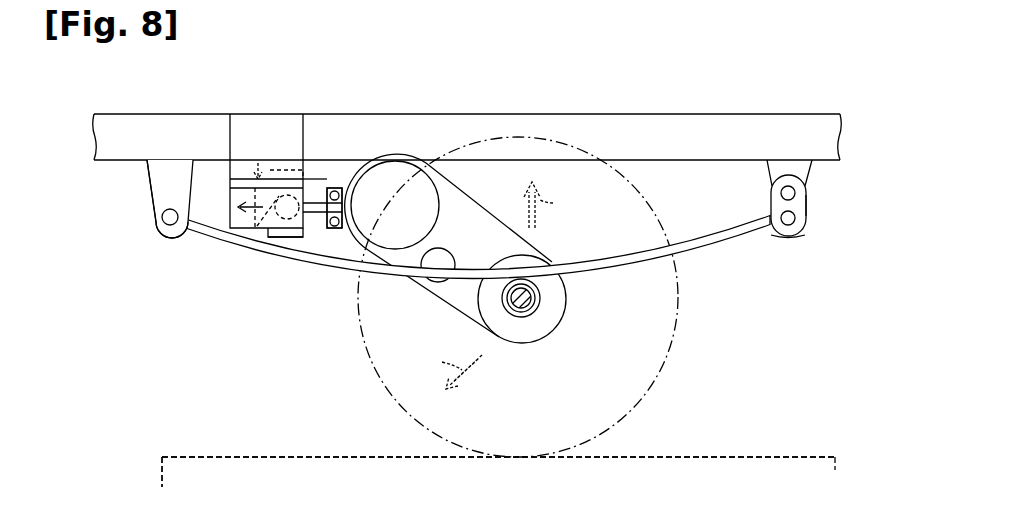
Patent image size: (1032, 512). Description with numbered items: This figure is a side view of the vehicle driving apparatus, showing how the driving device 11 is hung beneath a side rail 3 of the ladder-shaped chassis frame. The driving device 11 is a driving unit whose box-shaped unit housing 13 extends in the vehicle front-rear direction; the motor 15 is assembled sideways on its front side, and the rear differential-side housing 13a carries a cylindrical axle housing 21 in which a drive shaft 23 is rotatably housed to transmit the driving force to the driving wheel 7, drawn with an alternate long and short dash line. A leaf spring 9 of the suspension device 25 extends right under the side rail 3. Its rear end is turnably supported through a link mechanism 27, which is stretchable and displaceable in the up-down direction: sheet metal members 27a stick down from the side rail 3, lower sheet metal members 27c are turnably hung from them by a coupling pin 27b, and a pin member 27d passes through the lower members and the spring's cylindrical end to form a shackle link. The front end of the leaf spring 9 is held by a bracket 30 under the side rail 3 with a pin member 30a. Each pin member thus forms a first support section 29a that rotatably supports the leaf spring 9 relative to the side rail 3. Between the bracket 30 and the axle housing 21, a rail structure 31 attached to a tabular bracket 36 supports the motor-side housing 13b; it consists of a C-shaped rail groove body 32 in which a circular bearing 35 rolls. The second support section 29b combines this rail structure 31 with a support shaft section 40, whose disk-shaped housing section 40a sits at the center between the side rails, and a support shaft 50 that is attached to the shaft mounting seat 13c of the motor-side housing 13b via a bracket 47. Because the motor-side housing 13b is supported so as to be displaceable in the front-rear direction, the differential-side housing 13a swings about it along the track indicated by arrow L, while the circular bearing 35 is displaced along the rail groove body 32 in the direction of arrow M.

The side rail 3 is at (697, 113).
The driving wheel 7 is at (676, 338).
The leaf spring 9 is at (732, 245).
The driving device 11 is at (350, 323).
The unit housing 13 is at (474, 197).
The differential-side housing 13a is at (542, 343).
The motor-side housing 13b is at (352, 250).
The shaft mounting seat 13c is at (334, 229).
The motor 15 is at (372, 165).
The axle housing 21 is at (538, 302).
The drive shaft 23 is at (518, 320).
The suspension device 25 is at (775, 264).
The link mechanism 27 is at (753, 188).
The sheet metal member 27a is at (789, 170).
The coupling pin 27b is at (803, 191).
The sheet metal member 27c is at (806, 203).
The pin member 27d is at (798, 221).
The first support section 29a is at (167, 249).
The second support section 29b is at (321, 170).
The bracket 30 is at (152, 207).
The pin member 30a is at (158, 230).
The rail structure 31 is at (197, 198).
The rail groove body 32 is at (243, 233).
The circular bearing 35 is at (256, 225).
The tabular bracket 36 is at (243, 114).
The support shaft section 40 is at (292, 250).
The housing section 40a is at (294, 249).
The bracket 47 is at (334, 208).
The support shaft 50 is at (320, 203).
The arrow indicating swing track L is at (500, 285).
The arrow indicating bearing displacement direction M is at (264, 160).